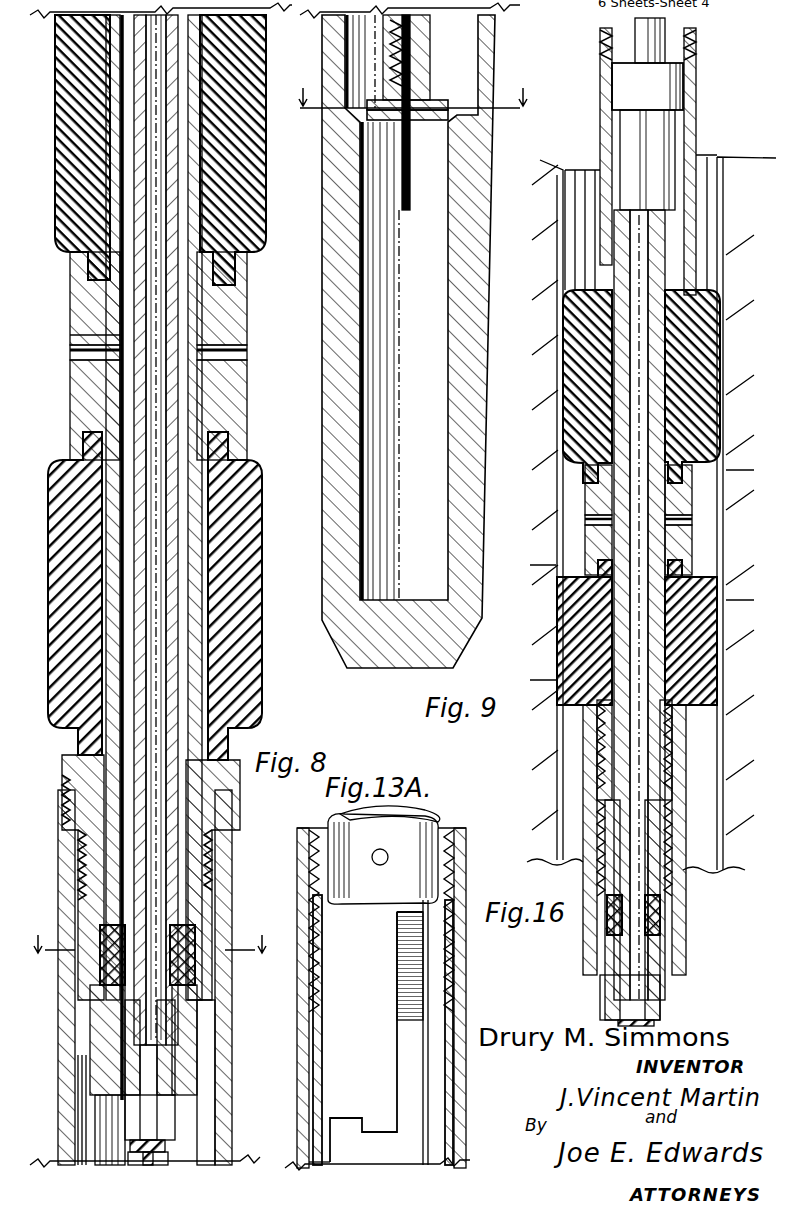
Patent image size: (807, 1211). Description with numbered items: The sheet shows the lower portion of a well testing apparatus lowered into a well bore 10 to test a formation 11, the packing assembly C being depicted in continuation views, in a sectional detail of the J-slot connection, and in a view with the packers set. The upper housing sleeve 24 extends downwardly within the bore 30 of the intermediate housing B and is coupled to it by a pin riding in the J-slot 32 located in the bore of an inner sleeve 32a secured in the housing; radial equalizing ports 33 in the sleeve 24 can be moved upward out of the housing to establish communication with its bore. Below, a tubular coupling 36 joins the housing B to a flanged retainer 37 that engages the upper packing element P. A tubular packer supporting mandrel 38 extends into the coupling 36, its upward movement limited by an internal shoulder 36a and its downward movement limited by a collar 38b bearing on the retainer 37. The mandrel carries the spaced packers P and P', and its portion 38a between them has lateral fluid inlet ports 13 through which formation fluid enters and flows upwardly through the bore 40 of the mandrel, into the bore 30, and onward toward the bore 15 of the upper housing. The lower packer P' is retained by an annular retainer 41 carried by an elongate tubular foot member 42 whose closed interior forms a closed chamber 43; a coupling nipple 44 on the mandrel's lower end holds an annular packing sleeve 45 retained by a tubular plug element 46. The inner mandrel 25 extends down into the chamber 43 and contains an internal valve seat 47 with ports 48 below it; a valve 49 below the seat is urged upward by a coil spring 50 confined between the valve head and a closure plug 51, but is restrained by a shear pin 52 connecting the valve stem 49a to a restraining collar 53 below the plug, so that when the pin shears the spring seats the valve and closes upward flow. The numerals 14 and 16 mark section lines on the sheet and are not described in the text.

In FIG. 16, the well bore 10 is at (726, 184).
In FIG. 16, the formation 11 is at (700, 528).
In FIG. 8, the fluid inlet port 13 is at (235, 357).
In FIG. 16, the fluid inlet port 13 is at (686, 545).
In FIG. 8, the section line 14- 14 is at (148, 929).
In FIG. 9, the bore of the upper housing 15 is at (416, 85).
In FIG. 8, the wires 16 is at (90, 1063).
In FIG. 13A, the sleeve 24 is at (410, 820).
In FIG. 8, the inner mandrel 25 is at (180, 400).
In FIG. 9, the inner mandrel 25 is at (433, 40).
In FIG. 16, the inner mandrel 25 is at (650, 357).
In FIG. 13A, the bore of the intermediate housing 30 is at (322, 1165).
In FIG. 13A, the J-slot 32 is at (397, 950).
In FIG. 13A, the inner sleeve 32a is at (458, 946).
In FIG. 13A, the equalizing ports 33 is at (378, 866).
In FIG. 16, the tubular coupling 36 is at (700, 212).
In FIG. 16, the internal shoulder 36a is at (698, 62).
In FIG. 16, the flanged retainer 37 is at (698, 298).
In FIG. 8, the packer supporting mandrel 38 is at (212, 186).
In FIG. 16, the packer supporting mandrel 38 is at (722, 328).
In FIG. 8, the portion between the packing elements 38a is at (88, 330).
In FIG. 16, the collar 38b is at (657, 95).
In FIG. 8, the bore of the mandrel 40 is at (203, 307).
In FIG. 16, the bore of the mandrel 40 is at (698, 138).
In FIG. 8, the annular retainer 41 is at (62, 748).
In FIG. 16, the annular retainer 41 is at (688, 725).
In FIG. 8, the tubular foot member 42 is at (232, 1008).
In FIG. 9, the tubular foot member 42 is at (480, 296).
In FIG. 16, the tubular foot member 42 is at (688, 808).
In FIG. 8, the closed chamber 43 is at (210, 1116).
In FIG. 9, the closed chamber 43 is at (460, 436).
In FIG. 8, the coupling nipple 44 is at (196, 982).
In FIG. 16, the coupling nipple 44 is at (668, 905).
In FIG. 8, the annular packing sleeve 45 is at (104, 966).
In FIG. 16, the annular packing sleeve 45 is at (663, 930).
In FIG. 16, the tubular plug element 46 is at (660, 997).
In FIG. 8, the internal valve seat 47 is at (132, 1107).
In FIG. 16, the internal valve seat 47 is at (655, 1024).
In FIG. 8, the ports 48 is at (130, 1131).
In FIG. 8, the valve 49 is at (165, 1148).
In FIG. 8, the valve stem 49a is at (150, 1168).
In FIG. 9, the valve stem 49a is at (406, 214).
In FIG. 8, the coil spring 50 is at (128, 1163).
In FIG. 9, the coil spring 50 is at (433, 63).
In FIG. 9, the closure plug 51 is at (440, 100).
In FIG. 9, the shear pin 52 is at (408, 129).
In FIG. 9, the restraining collar 53 is at (362, 128).
In FIG. 13A, the intermediate housing B is at (460, 922).
In FIG. 16, the intermediate housing B is at (700, 40).
In FIG. 8, the packing assembly C is at (64, 772).
In FIG. 16, the packing assembly C is at (698, 278).
In FIG. 8, the upper packer P is at (273, 215).
In FIG. 16, the upper packer P is at (749, 394).
In FIG. 8, the lower packer P' is at (171, 596).
In FIG. 16, the lower packer P' is at (669, 632).